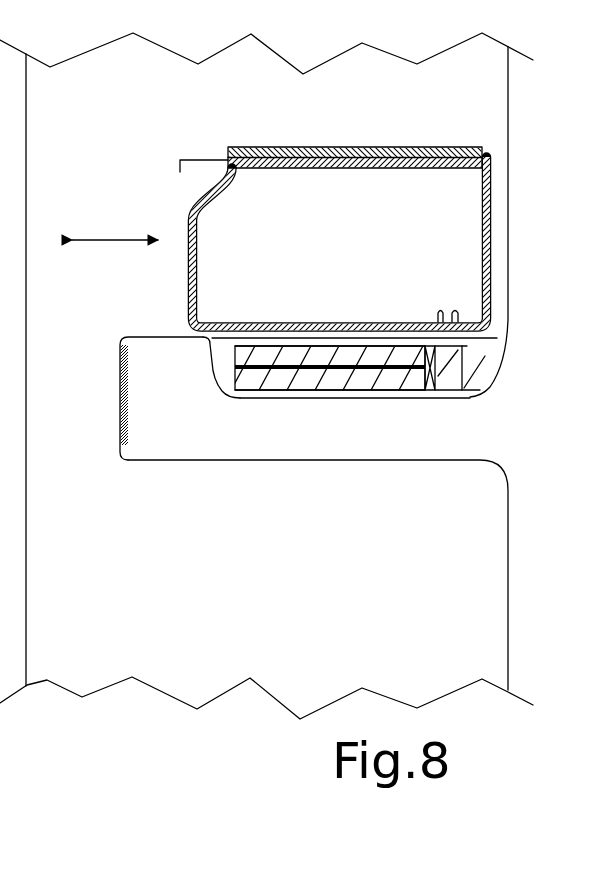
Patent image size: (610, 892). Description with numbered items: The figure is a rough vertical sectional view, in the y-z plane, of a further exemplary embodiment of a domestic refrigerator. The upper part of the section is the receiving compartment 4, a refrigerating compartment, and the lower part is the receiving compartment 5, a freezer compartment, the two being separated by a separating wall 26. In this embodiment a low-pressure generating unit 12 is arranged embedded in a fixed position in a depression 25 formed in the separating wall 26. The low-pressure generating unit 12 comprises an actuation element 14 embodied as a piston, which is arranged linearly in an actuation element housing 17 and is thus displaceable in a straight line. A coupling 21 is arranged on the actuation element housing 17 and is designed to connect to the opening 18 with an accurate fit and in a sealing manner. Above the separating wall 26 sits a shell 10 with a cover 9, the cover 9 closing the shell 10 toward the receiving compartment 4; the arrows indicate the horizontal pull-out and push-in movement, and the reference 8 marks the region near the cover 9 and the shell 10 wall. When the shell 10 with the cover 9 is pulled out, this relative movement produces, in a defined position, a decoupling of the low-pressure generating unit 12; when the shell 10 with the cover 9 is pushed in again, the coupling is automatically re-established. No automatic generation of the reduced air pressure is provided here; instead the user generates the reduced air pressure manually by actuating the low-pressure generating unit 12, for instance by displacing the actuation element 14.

The receiving compartment 4 is at (341, 111).
The receiving compartment 5 is at (331, 562).
The gap 8 is at (179, 191).
The cover 9 is at (277, 147).
The shell 10 is at (178, 285).
The low-pressure generating unit 12 is at (436, 401).
The actuation element 14 is at (334, 371).
The actuation element housing 17 is at (254, 401).
The opening 18 is at (445, 306).
The coupling 21 is at (467, 346).
The depression 25 is at (216, 353).
The separating wall 26 is at (177, 432).